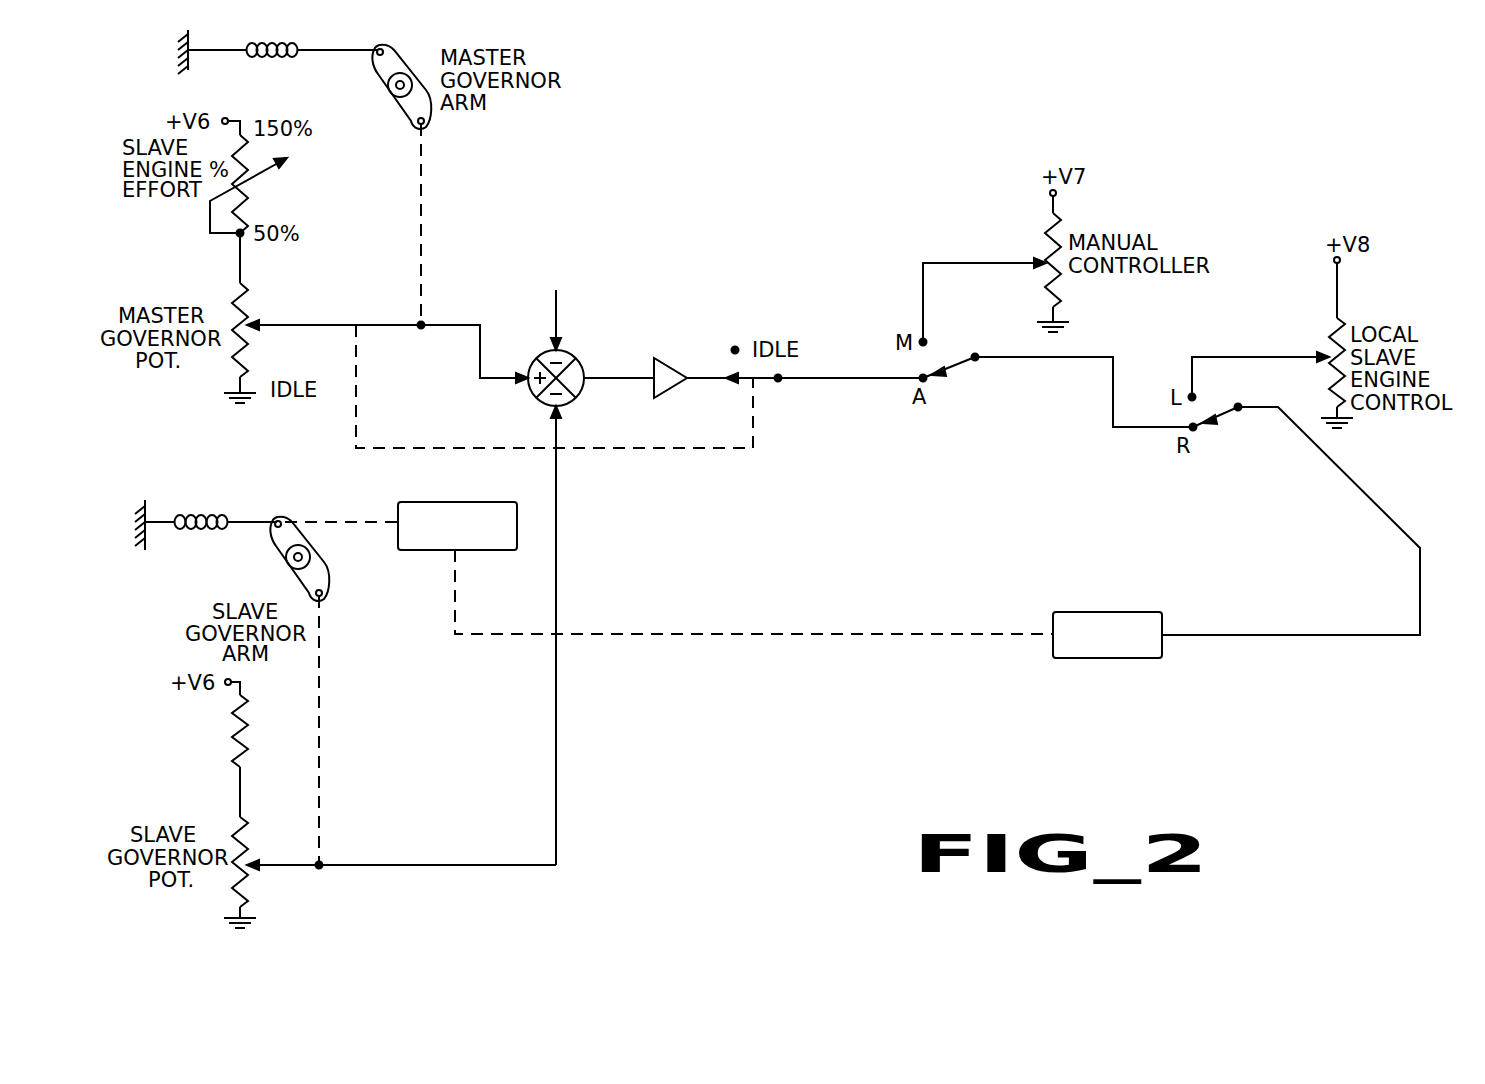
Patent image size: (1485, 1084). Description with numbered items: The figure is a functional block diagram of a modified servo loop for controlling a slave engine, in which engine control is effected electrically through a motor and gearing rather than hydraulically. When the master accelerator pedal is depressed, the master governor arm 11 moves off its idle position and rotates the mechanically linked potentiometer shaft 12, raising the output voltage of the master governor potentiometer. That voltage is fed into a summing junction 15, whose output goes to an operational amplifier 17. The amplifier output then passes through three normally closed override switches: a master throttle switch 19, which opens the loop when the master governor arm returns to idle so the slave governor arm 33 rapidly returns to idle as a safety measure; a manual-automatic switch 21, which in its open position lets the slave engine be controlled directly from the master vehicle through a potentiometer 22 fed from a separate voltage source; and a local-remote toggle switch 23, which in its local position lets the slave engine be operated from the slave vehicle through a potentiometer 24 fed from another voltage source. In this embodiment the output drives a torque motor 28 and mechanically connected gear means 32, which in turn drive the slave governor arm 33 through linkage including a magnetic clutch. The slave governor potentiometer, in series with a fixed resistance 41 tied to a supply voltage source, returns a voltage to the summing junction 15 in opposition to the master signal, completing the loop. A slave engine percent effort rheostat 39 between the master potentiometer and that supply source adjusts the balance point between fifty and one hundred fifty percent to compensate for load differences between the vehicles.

The governor arm 11 is at (375, 72).
The potentiometer shaft 12 is at (397, 323).
The summing junction 15 is at (572, 356).
The operational amplifier 17 is at (657, 396).
The master throttle switch 19 is at (763, 382).
The manual-automatic switch 21 is at (940, 377).
The potentiometer 22 is at (1034, 238).
The local-remote control switch 23 is at (1214, 418).
The potentiometer 24 is at (1328, 322).
The torque motor 28 is at (1112, 612).
The gear means 32 is at (506, 502).
The slave governor arm 33 is at (318, 568).
The rheostat 39 is at (258, 189).
The fixed resistance 41 is at (232, 727).